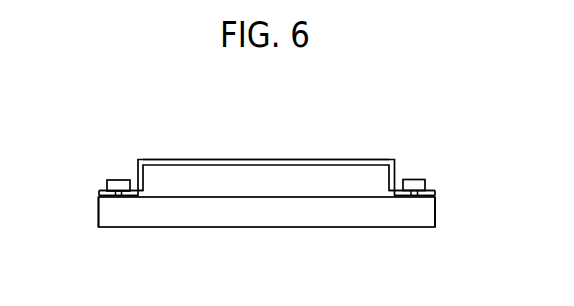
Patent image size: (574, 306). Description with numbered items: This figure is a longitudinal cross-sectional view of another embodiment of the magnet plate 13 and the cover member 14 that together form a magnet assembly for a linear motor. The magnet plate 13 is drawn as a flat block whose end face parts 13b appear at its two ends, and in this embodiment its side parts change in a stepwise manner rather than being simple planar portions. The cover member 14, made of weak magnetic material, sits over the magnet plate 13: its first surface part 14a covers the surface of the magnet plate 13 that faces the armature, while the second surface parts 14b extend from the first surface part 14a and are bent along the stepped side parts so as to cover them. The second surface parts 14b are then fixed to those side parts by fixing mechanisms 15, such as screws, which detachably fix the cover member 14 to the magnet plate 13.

The magnet plate 13 is at (313, 203).
The end face part 13b is at (107, 211).
The cover member 14 is at (183, 159).
The first surface part 14a is at (267, 158).
The second surface part 14b is at (137, 173).
The fixing mechanism 15 is at (107, 185).